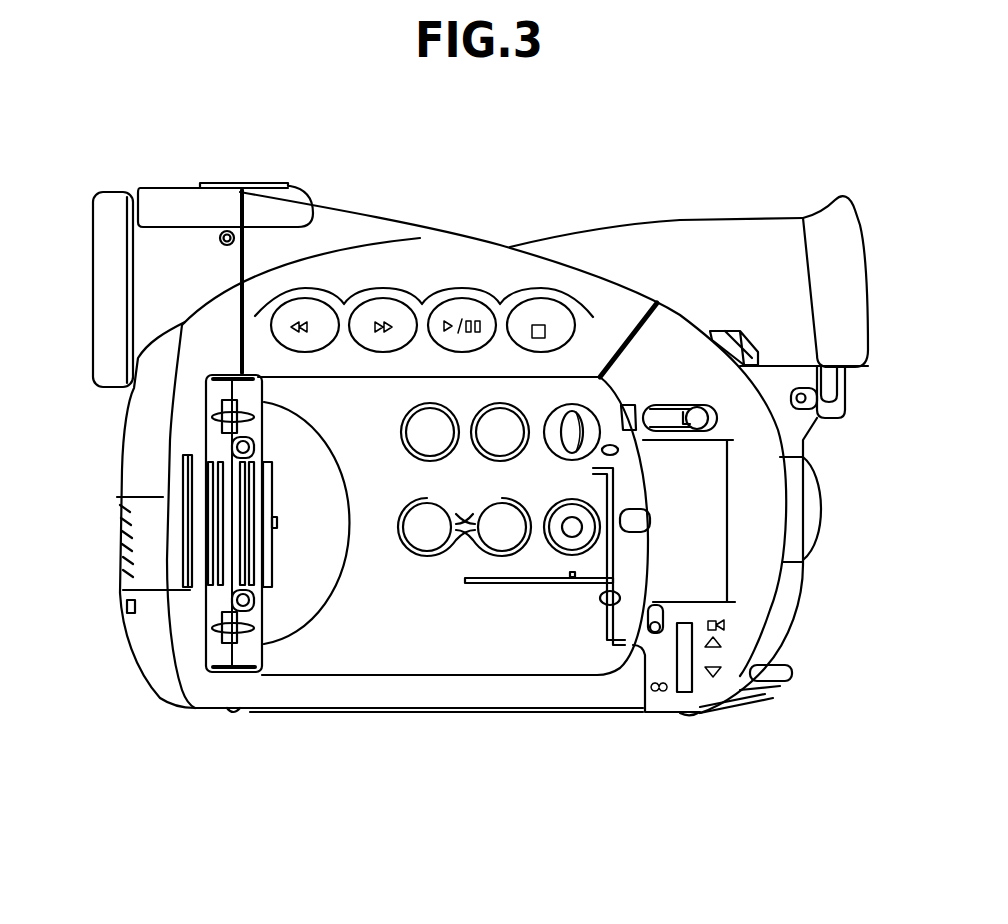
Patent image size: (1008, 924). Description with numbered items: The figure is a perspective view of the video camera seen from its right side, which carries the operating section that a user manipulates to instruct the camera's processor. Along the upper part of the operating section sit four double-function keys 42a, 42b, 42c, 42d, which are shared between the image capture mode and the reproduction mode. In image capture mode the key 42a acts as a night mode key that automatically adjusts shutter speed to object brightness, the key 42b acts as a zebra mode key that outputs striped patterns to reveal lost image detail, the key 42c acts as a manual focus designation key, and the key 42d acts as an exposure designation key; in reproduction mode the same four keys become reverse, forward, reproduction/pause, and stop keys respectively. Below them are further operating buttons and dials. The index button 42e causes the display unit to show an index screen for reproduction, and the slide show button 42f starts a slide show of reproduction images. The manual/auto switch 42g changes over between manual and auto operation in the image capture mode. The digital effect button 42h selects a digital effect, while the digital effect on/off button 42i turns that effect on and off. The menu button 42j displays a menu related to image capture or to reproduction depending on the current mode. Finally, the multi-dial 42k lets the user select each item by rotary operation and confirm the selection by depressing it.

The double-function key 42a is at (302, 312).
The double-function key 42b is at (390, 307).
The double-function key 42c is at (468, 313).
The double-function key 42d is at (543, 313).
The index button 42e is at (420, 432).
The slide show button 42f is at (500, 437).
The manual/auto switch 42g is at (585, 420).
The digital effect button 42h is at (423, 533).
The digital effect on/off button 42i is at (502, 533).
The menu button 42j is at (564, 538).
The multi-dial 42k is at (683, 683).